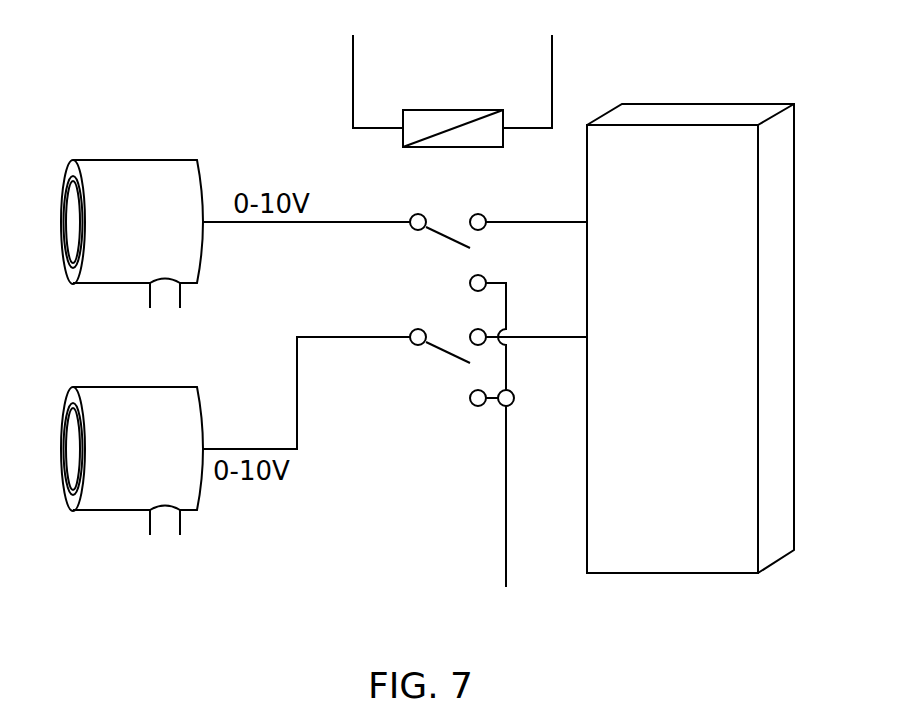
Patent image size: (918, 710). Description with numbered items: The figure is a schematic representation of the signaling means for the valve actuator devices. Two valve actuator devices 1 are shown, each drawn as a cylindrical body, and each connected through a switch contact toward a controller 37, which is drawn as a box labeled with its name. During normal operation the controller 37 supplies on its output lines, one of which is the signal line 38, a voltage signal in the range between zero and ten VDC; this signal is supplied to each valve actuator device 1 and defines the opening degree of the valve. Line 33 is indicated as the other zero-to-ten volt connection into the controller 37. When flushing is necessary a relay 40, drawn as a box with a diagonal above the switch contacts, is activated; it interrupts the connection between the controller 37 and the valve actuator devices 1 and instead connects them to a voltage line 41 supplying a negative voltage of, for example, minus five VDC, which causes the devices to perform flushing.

The valve actuator device 1 is at (124, 136).
The first input line 33 is at (527, 223).
The controller 37 is at (777, 212).
The output line 38 is at (532, 342).
The relay 40 is at (447, 110).
The voltage line 41 is at (506, 502).